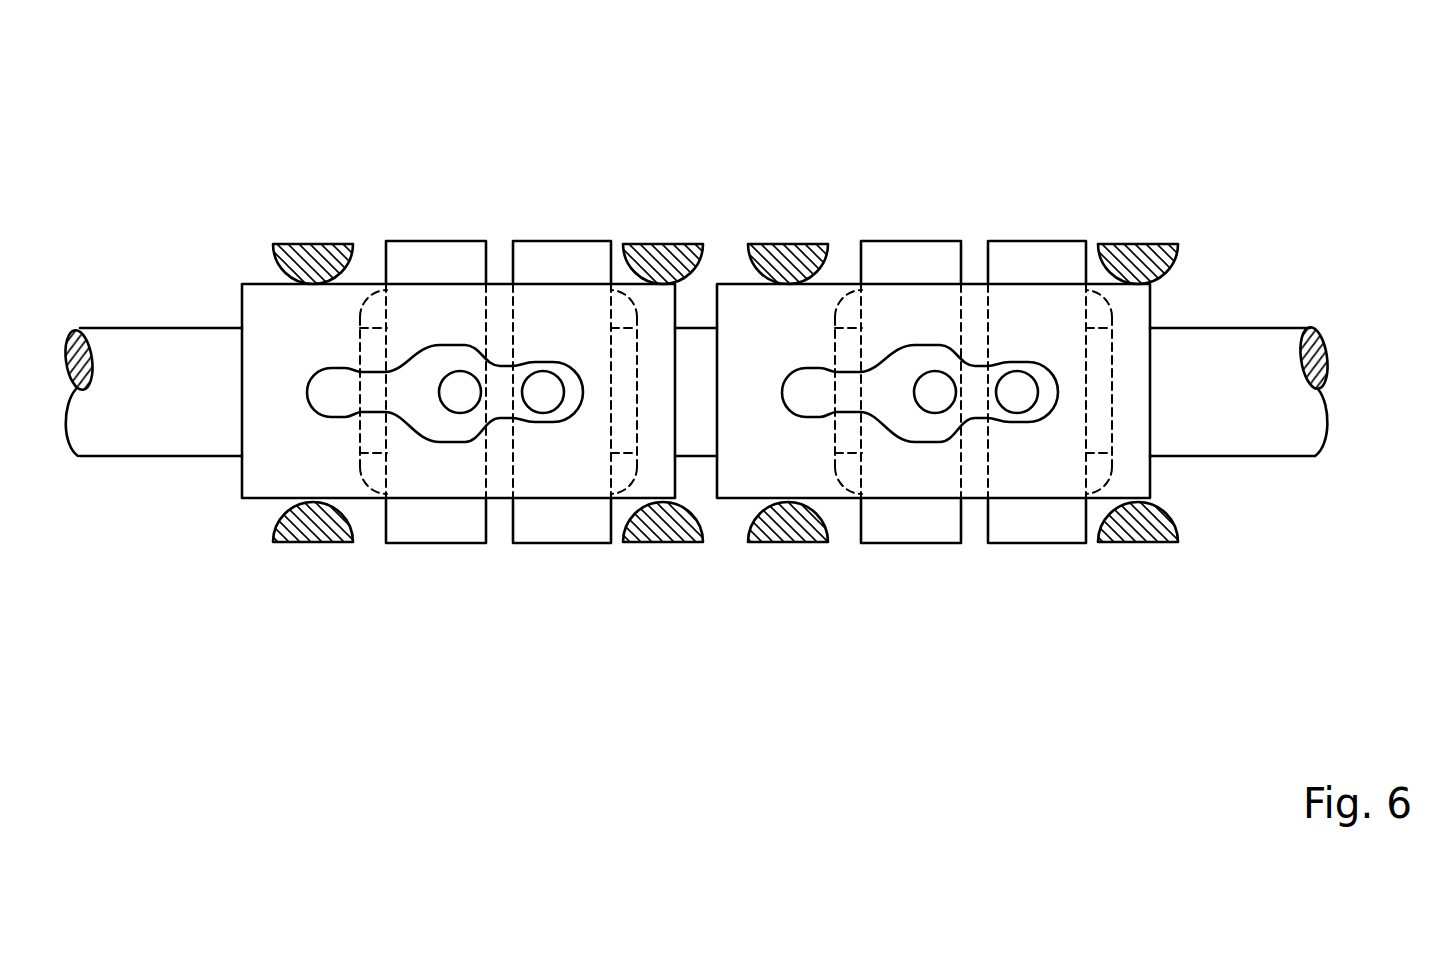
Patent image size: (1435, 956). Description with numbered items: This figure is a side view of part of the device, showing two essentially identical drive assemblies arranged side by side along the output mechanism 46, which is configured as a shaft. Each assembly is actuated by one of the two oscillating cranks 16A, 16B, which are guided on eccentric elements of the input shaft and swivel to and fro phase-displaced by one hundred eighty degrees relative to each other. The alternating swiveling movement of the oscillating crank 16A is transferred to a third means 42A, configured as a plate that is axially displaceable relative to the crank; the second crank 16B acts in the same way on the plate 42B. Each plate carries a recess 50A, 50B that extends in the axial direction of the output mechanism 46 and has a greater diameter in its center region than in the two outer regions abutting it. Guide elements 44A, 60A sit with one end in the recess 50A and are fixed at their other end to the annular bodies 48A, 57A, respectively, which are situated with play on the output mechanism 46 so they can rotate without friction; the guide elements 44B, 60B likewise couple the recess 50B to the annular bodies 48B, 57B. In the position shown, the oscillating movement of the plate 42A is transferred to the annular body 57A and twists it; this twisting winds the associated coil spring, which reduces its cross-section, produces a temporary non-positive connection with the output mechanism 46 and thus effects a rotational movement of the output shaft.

The oscillating crank 16A is at (308, 260).
The oscillating crank 16B is at (783, 260).
The third means 42A is at (261, 333).
The third means 42B is at (748, 322).
The guide element 44A is at (460, 388).
The guide element 44B is at (935, 388).
The output mechanism 46 is at (1236, 377).
The annular body 48A is at (437, 528).
The annular body 48B is at (912, 528).
The recess 50A is at (333, 393).
The recess 50B is at (807, 392).
The annular body 57A is at (568, 528).
The annular body 57B is at (1033, 523).
The guide element 60A is at (543, 388).
The guide element 60B is at (1017, 388).